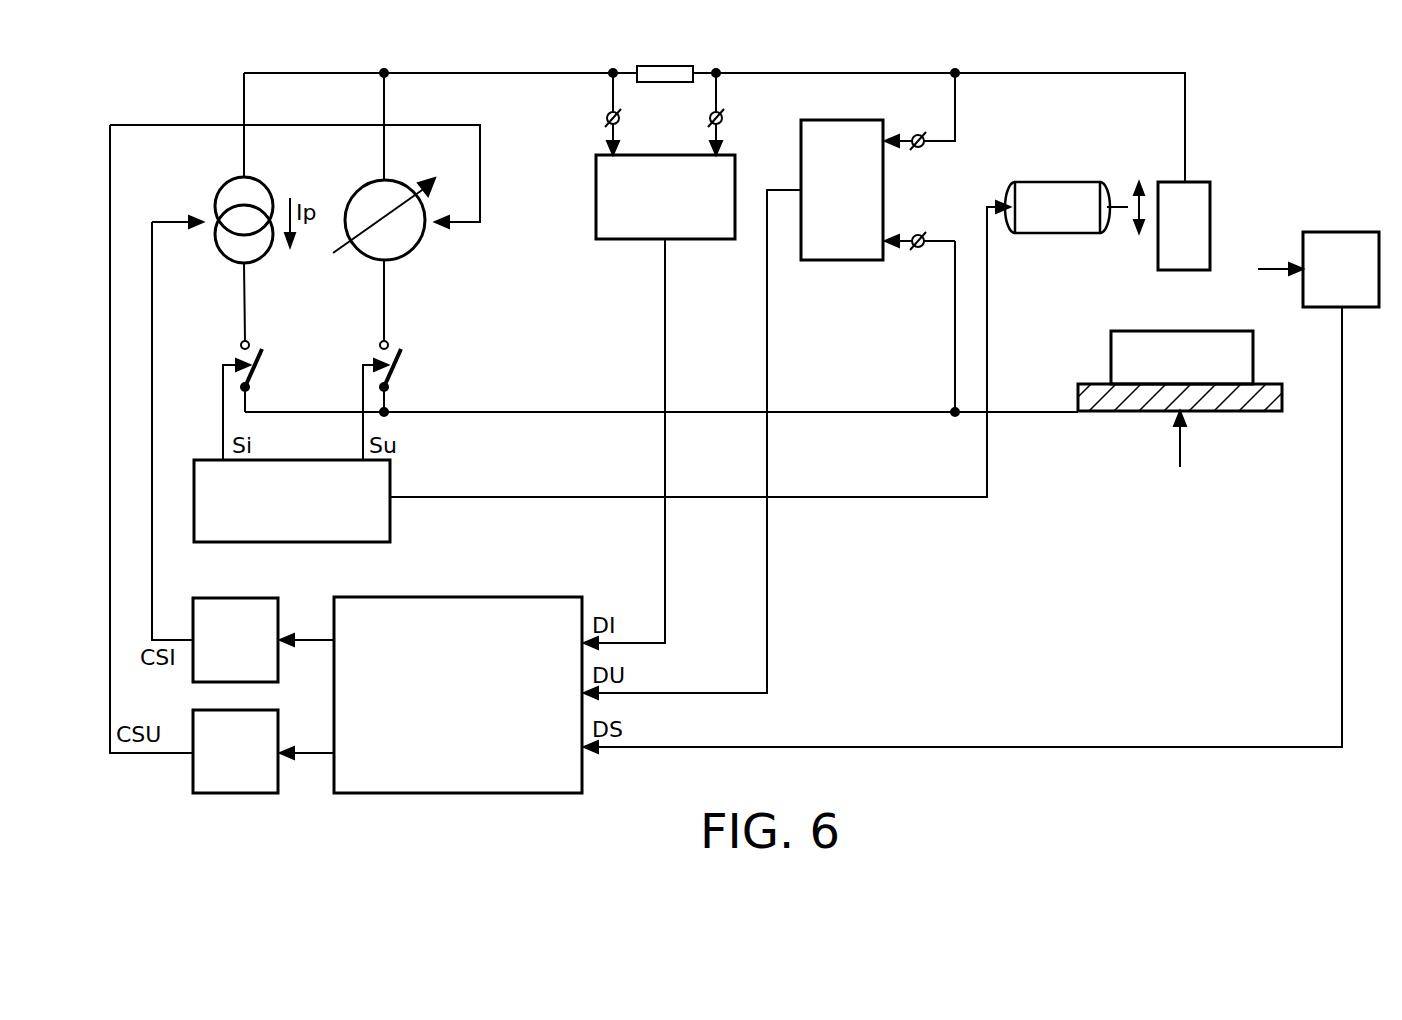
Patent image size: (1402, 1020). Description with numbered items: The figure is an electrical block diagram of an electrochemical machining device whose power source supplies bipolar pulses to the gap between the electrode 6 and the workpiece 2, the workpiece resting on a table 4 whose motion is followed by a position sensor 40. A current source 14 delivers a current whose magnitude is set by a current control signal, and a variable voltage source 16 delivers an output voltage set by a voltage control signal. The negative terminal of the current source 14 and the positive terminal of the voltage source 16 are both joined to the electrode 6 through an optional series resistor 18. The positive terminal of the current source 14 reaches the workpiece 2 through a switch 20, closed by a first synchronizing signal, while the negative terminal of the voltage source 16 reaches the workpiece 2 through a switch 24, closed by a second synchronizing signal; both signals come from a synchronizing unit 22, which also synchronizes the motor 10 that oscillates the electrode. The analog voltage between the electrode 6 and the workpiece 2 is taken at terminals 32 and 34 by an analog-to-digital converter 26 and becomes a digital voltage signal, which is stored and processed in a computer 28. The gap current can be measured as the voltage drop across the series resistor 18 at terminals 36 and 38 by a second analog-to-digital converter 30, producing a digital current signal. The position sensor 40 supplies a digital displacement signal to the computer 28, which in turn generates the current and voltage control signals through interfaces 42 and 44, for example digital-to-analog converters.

The workpiece 2 is at (1232, 334).
The table 4 is at (1133, 411).
The electrode 6 is at (1197, 190).
The motor 10 is at (1077, 185).
The current source 14 is at (220, 250).
The variable voltage source 16 is at (360, 257).
The series resistor 18 is at (660, 82).
The switch 20 is at (264, 363).
The synchronizing unit 22 is at (380, 482).
The switch 24 is at (402, 363).
The analog-to-digital converter 26 is at (820, 132).
The computer 28 is at (500, 793).
The second analog-to-digital converter 30 is at (623, 239).
The terminal 32 is at (918, 133).
The terminal 34 is at (918, 233).
The terminal 36 is at (605, 117).
The terminal 38 is at (725, 118).
The position sensor 40 is at (1332, 232).
The interface 42 is at (263, 610).
The interface 44 is at (238, 793).